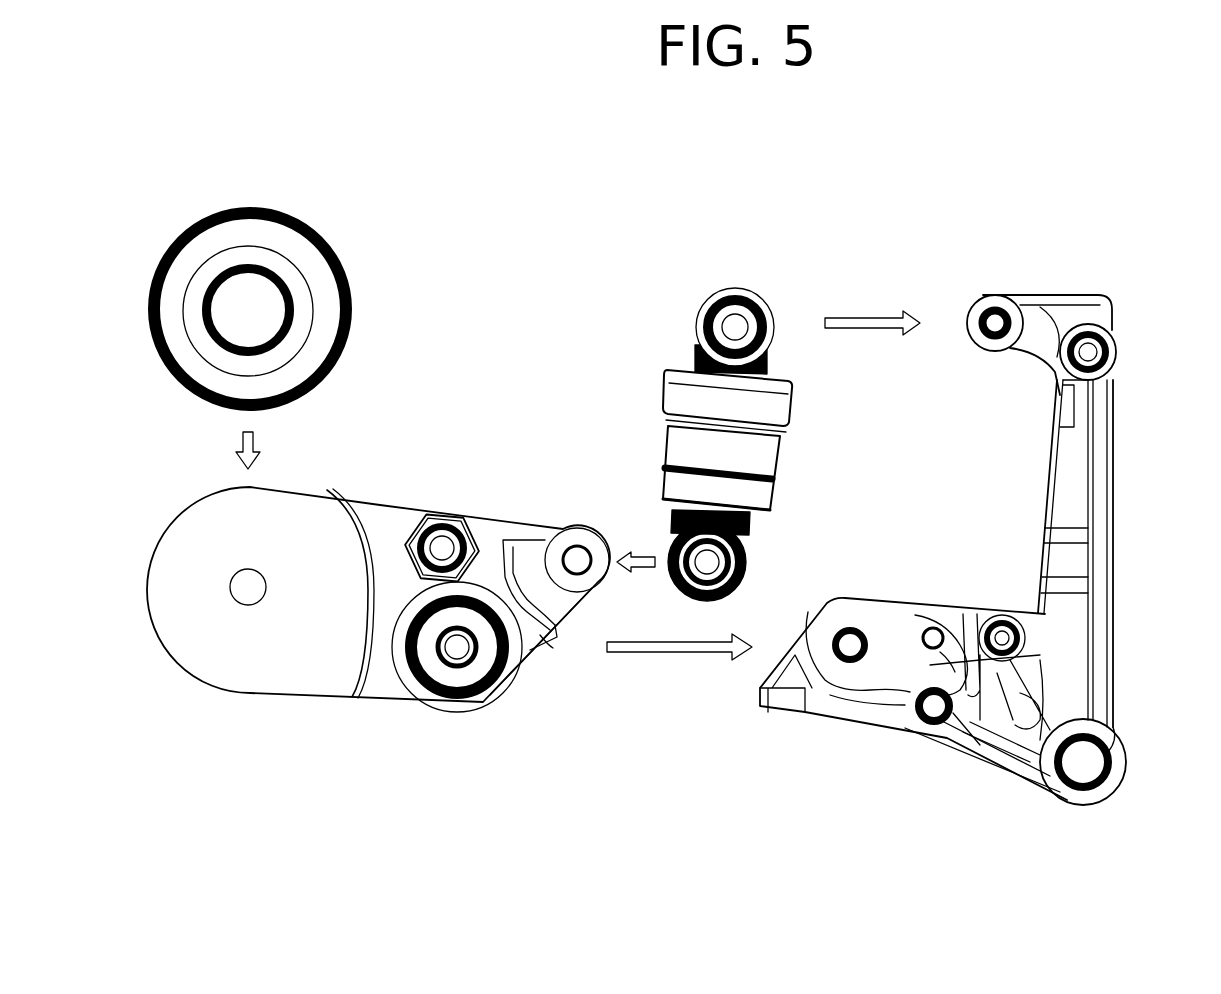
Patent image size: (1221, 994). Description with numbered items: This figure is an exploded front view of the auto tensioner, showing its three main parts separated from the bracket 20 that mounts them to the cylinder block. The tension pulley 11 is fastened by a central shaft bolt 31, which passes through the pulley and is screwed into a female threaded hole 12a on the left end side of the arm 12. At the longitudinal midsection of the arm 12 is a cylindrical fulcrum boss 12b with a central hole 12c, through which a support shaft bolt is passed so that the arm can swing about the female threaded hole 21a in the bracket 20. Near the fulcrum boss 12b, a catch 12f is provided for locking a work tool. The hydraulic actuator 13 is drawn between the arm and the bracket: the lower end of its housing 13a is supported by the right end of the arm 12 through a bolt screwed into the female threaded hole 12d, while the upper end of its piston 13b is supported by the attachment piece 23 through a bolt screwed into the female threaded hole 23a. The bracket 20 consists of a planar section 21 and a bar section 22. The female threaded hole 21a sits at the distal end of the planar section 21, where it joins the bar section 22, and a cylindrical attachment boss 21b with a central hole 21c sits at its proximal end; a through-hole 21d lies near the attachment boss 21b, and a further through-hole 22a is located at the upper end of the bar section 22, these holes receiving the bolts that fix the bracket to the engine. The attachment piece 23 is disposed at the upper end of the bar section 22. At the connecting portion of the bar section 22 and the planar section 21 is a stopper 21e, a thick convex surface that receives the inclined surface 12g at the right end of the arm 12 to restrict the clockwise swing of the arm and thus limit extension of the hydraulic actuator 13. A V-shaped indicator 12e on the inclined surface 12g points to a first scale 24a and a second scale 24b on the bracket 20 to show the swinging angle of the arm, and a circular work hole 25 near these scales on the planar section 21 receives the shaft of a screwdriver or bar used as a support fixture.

The tension pulley 11 is at (293, 287).
The central shaft bolt 31 is at (260, 293).
The arm 12 is at (382, 594).
The female threaded hole 12a is at (232, 578).
The fulcrum boss 12b is at (456, 677).
The central hole 12c is at (442, 660).
The female threaded hole 12d is at (568, 543).
The indicator 12e is at (557, 643).
The catch 12f is at (433, 512).
The inclined surface 12g is at (550, 640).
The hydraulic actuator 13 is at (713, 444).
The housing 13a is at (750, 443).
The piston 13b is at (692, 360).
The bracket 20 is at (1007, 507).
The planar section 21 is at (972, 688).
The female threaded hole 21a is at (827, 620).
The attachment boss 21b is at (1113, 747).
The central hole 21c is at (1068, 768).
The through-hole 21d is at (923, 718).
The stopper 21e is at (985, 615).
The bar section 22 is at (1112, 524).
The through-hole 22a is at (1115, 342).
The attachment piece 23 is at (1029, 304).
The female threaded hole 23a is at (980, 296).
The first scale 24a is at (947, 610).
The second scale 24b is at (937, 655).
The work hole 25 is at (928, 628).